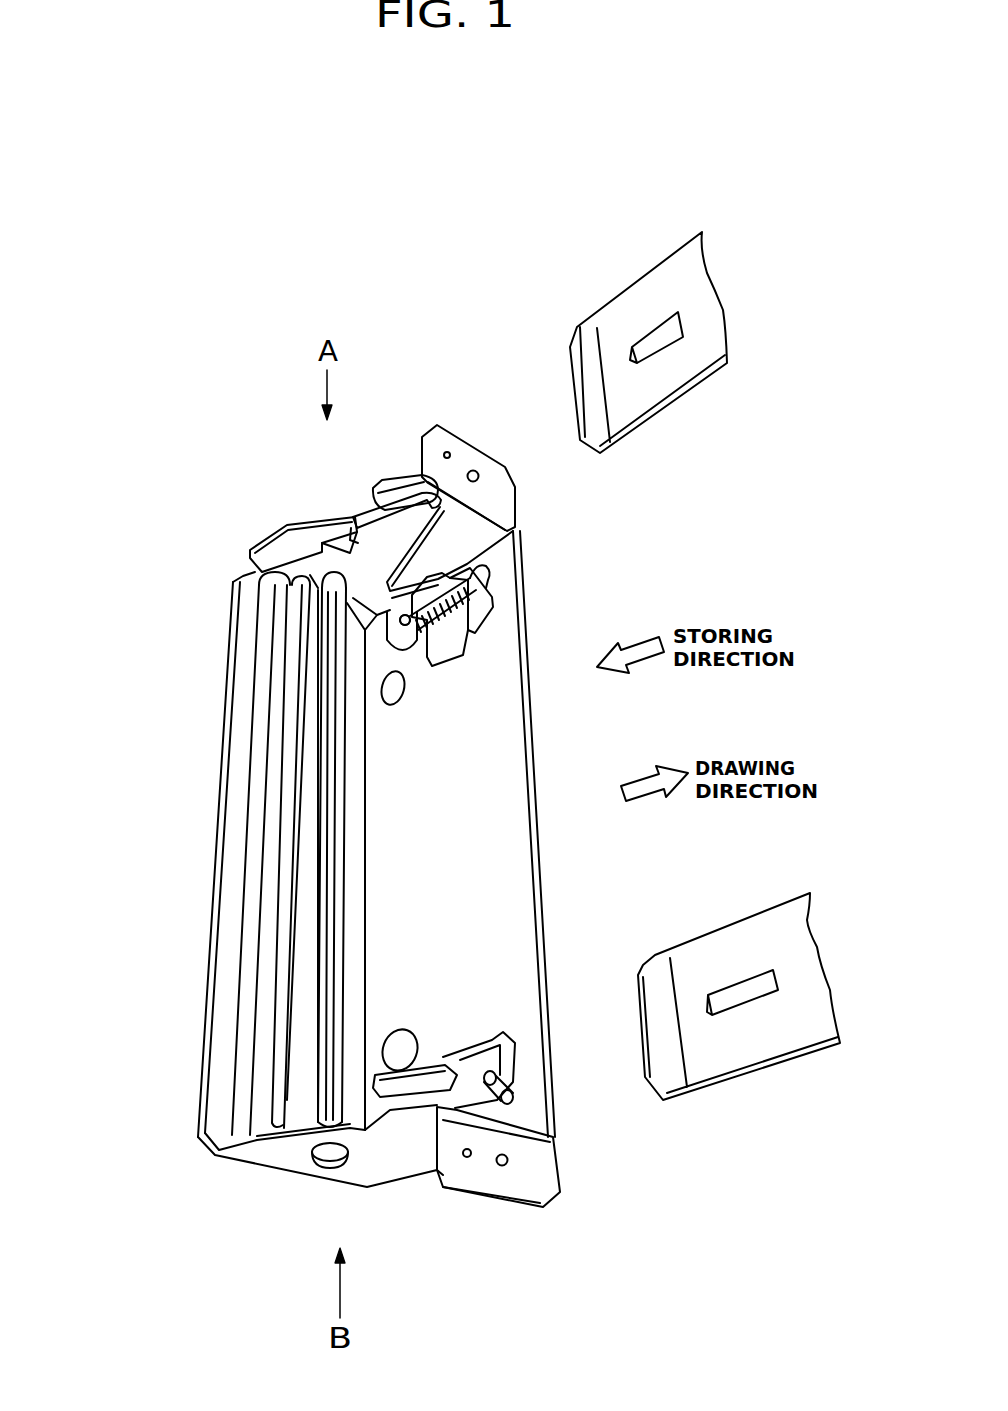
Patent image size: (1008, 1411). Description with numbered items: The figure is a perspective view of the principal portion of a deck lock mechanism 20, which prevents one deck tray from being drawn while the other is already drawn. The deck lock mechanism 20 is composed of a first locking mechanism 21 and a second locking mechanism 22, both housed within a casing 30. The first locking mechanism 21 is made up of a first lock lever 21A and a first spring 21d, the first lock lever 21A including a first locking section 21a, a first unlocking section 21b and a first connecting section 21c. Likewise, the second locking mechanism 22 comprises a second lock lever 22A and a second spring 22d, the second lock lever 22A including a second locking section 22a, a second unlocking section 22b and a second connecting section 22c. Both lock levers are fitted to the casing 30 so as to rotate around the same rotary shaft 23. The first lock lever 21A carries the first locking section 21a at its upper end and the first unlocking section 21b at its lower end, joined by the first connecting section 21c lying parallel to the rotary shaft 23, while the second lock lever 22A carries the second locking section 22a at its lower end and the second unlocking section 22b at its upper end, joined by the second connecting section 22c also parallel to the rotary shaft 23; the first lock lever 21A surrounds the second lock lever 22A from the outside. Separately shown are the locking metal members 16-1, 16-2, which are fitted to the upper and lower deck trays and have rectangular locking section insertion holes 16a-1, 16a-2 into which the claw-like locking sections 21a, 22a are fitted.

The locking metal member 16-1 is at (692, 279).
The locking section insertion hole 16a-1 is at (672, 327).
The locking metal member 16-2 is at (727, 937).
The locking section insertion hole 16a-2 is at (767, 987).
The deck lock mechanism 20 is at (497, 643).
The first locking mechanism 21 is at (247, 623).
The first lock lever 21A is at (250, 685).
The first locking section 21a is at (388, 475).
The first unlocking section 21b is at (360, 1103).
The first connecting section 21c is at (263, 752).
The first spring 21d is at (480, 1072).
The second locking mechanism 22 is at (305, 1073).
The second lock lever 22A is at (292, 843).
The second locking section 22a is at (423, 1070).
The second unlocking section 22b is at (362, 523).
The second connecting section 22c is at (282, 917).
The second spring 22d is at (483, 560).
The rotary shaft 23 is at (337, 810).
The casing 30 is at (508, 756).